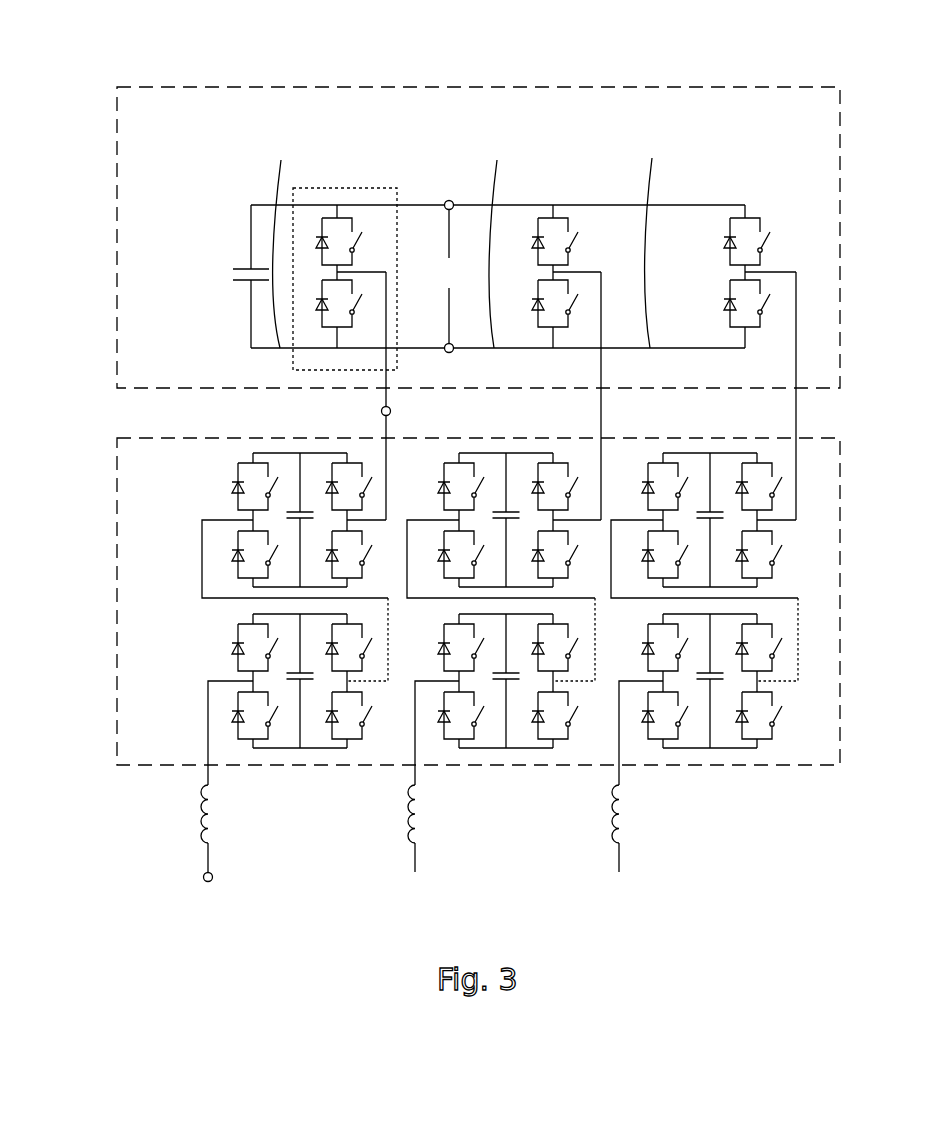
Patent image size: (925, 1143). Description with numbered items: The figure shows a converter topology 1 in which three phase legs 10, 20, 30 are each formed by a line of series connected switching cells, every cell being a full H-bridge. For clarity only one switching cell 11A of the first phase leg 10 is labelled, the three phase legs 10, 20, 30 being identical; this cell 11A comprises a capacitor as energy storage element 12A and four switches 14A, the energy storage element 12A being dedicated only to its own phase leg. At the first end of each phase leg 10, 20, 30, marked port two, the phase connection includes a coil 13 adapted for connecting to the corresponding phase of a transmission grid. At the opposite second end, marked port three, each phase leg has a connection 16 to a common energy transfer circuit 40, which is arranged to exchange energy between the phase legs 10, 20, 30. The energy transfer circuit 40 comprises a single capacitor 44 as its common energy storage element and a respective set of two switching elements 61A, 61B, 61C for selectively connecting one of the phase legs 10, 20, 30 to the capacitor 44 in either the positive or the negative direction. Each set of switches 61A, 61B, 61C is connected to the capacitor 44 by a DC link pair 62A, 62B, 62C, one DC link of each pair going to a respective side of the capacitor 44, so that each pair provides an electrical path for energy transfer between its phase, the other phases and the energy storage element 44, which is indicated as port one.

The power converter system 1 is at (56, 136).
The energy transfer circuit 40 is at (220, 87).
The capacitor 44 is at (216, 261).
The switching elements 61A is at (341, 185).
The switching elements 61B is at (554, 190).
The switching elements 61C is at (748, 191).
The DC link pair 62A is at (267, 205).
The DC link pair 62B is at (469, 205).
The DC link pair 62C is at (630, 205).
The connection 16 is at (381, 411).
The phase leg 10 is at (220, 643).
The phase leg 20 is at (504, 662).
The phase leg 30 is at (704, 662).
The switching cell 11A is at (158, 541).
The energy storage element 12A is at (292, 508).
The switches 14A is at (328, 495).
The coil 13 is at (183, 829).